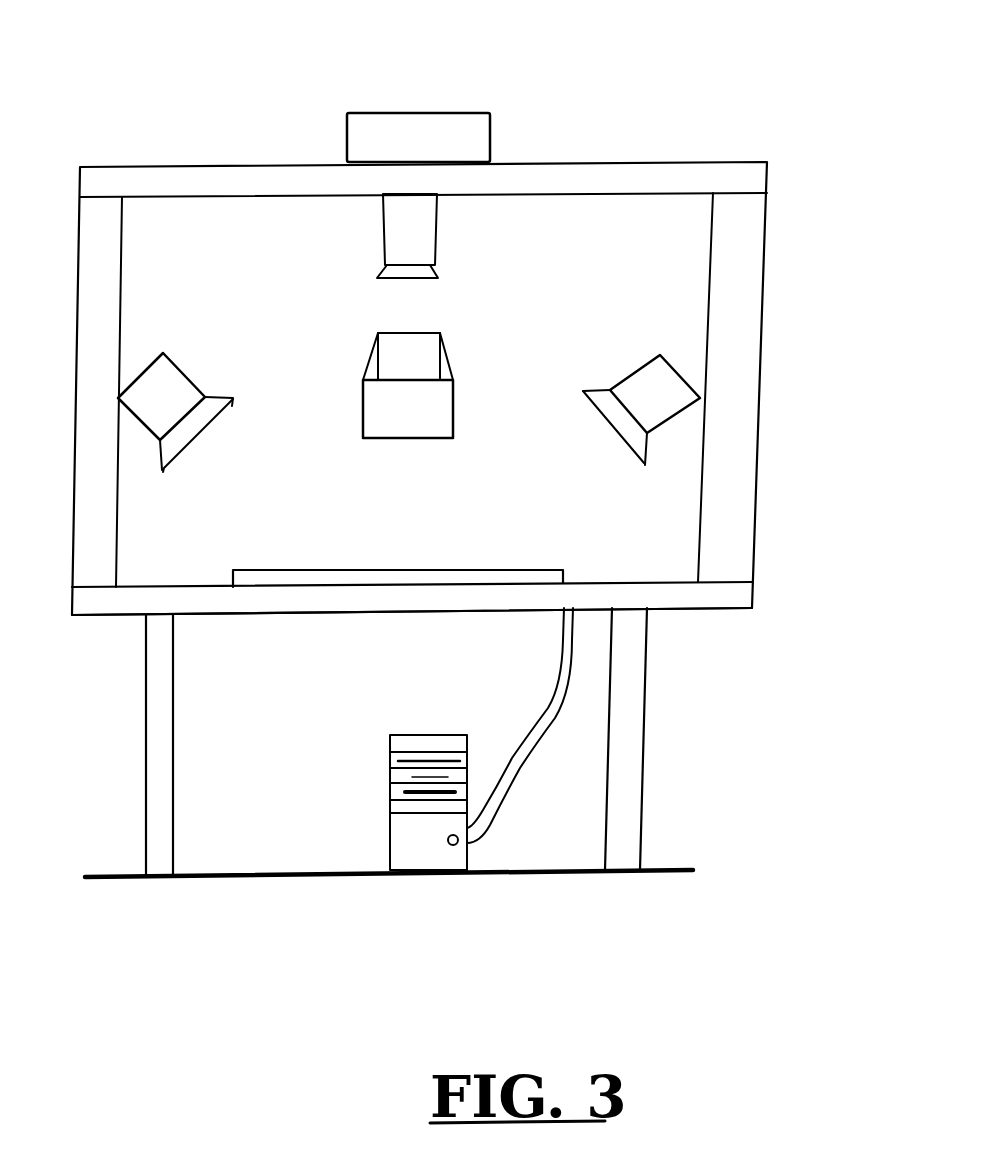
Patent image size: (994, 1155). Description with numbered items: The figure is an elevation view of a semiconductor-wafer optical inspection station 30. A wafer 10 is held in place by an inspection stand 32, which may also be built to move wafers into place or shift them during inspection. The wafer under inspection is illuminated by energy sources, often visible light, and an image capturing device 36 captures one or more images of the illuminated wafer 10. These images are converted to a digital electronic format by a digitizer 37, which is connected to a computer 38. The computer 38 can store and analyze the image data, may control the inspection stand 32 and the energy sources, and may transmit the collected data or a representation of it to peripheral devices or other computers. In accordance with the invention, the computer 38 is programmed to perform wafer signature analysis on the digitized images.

The semiconductor-wafer optical inspection station 30 is at (773, 50).
The inspection stand 32 is at (596, 580).
The wafer 10 is at (526, 568).
The image capturing device 36 is at (383, 226).
The digitizer 37 is at (465, 112).
The computer 38 is at (390, 791).